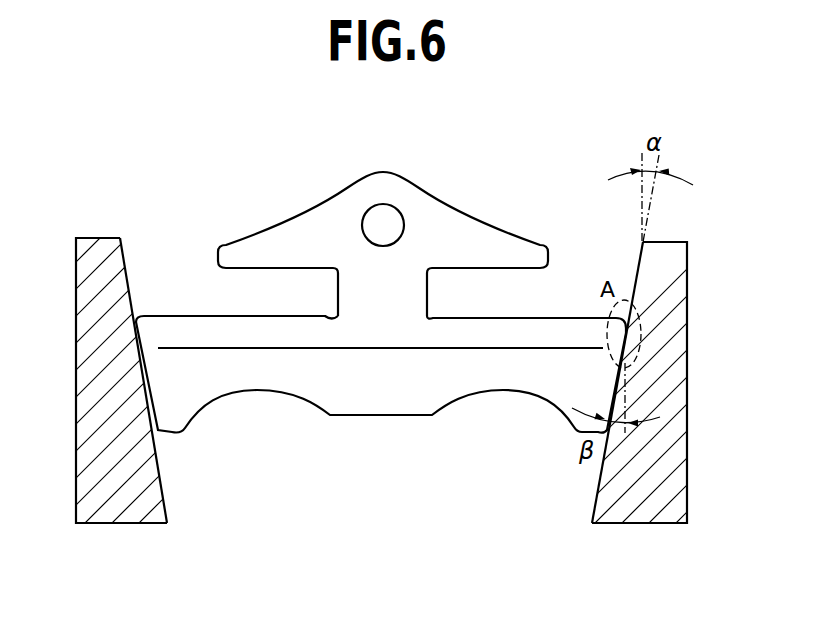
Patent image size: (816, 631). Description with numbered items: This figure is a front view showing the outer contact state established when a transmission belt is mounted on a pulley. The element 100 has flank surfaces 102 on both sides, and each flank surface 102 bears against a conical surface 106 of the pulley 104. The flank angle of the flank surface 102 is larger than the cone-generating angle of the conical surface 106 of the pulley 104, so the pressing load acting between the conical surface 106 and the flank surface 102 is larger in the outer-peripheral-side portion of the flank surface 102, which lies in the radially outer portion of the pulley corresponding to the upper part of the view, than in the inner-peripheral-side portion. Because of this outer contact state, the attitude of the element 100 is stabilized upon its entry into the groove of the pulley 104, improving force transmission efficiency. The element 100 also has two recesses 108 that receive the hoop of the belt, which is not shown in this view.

The element 100 is at (381, 287).
The flank surface 102 is at (150, 409).
The pulley 104 is at (408, 315).
The conical surface 106 is at (165, 478).
The recess 108 is at (209, 280).